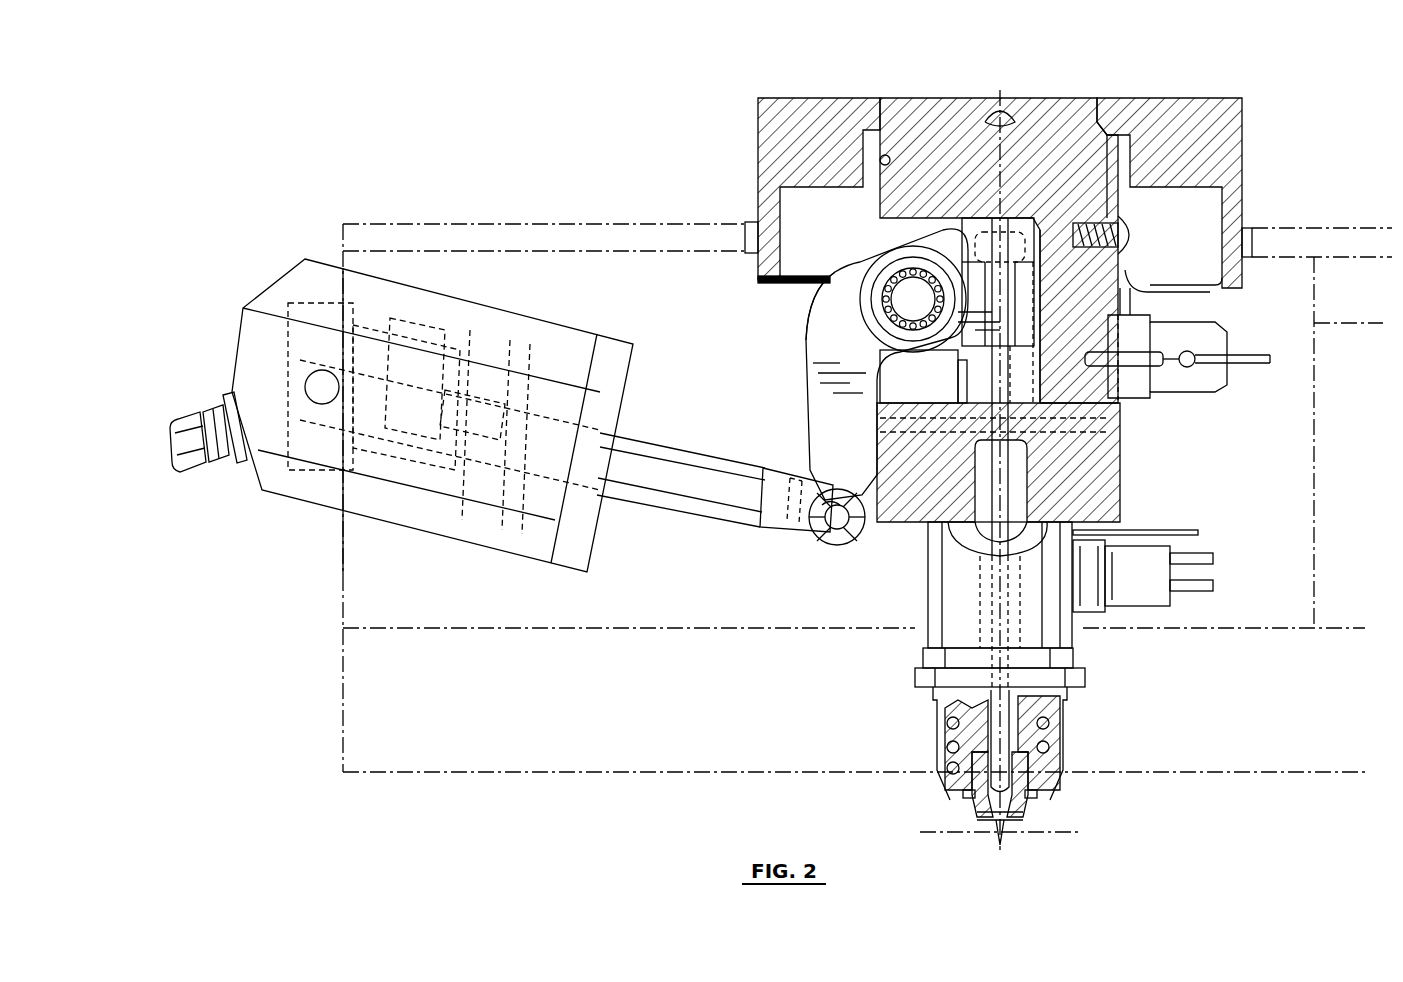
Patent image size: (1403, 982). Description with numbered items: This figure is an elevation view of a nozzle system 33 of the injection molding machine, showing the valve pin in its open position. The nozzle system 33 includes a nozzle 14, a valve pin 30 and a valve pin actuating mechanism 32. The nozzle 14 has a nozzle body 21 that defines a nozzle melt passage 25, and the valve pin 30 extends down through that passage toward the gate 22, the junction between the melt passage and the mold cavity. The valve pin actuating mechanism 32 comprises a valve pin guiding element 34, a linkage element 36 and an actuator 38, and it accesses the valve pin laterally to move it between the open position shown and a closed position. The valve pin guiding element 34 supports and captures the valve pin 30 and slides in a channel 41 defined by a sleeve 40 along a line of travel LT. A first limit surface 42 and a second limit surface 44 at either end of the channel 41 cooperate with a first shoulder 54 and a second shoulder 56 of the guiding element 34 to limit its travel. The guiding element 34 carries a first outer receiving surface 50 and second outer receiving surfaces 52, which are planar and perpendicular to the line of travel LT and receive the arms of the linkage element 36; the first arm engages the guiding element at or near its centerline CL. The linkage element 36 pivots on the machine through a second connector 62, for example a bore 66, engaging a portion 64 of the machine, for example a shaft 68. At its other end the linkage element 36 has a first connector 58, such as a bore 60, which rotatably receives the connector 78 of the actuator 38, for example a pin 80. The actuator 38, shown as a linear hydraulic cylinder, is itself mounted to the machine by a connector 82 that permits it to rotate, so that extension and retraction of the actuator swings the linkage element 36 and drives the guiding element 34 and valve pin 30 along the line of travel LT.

The nozzle 14 is at (897, 98).
The nozzle system 33 is at (600, 182).
The valve pin actuating mechanism 32 is at (731, 312).
The linkage element 36 is at (808, 388).
The portion on the molding machine 64 is at (915, 300).
The second connector 62 is at (918, 272).
The shaft 68 is at (873, 267).
The bore 66 is at (860, 262).
The second shoulder 56 is at (978, 352).
The first limit surface 42 is at (1020, 216).
The first shoulder 54 is at (1055, 208).
The first outer receiving surface 50 is at (1045, 272).
The second outer receiving surfaces 52 is at (1055, 302).
The valve pin guiding element 34 is at (1047, 328).
The second limit surface 44 is at (1048, 384).
The centerline CL is at (996, 168).
The line of travel LT is at (980, 398).
The channel 41 is at (1045, 356).
The valve pin 30 is at (1030, 457).
The sleeve 40 is at (1065, 404).
The nozzle melt passage 25 is at (1013, 488).
The nozzle body 21 is at (948, 620).
The gate 22 is at (1000, 836).
The actuator 38 is at (606, 503).
The connector 82 is at (317, 397).
The connector 78 is at (812, 533).
The first connector 58 is at (860, 527).
The bore 60 is at (840, 540).
The pin 80 is at (833, 523).